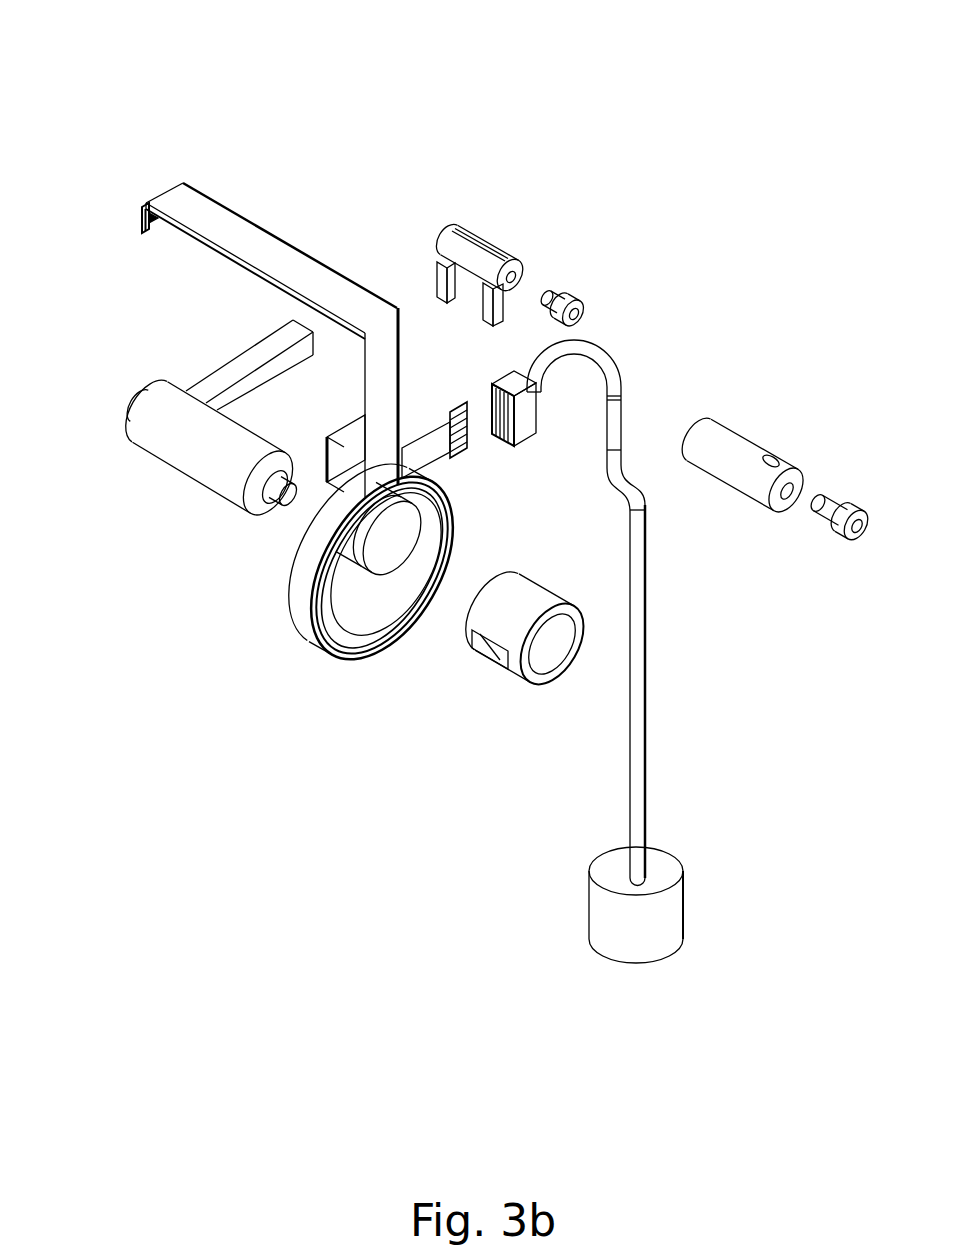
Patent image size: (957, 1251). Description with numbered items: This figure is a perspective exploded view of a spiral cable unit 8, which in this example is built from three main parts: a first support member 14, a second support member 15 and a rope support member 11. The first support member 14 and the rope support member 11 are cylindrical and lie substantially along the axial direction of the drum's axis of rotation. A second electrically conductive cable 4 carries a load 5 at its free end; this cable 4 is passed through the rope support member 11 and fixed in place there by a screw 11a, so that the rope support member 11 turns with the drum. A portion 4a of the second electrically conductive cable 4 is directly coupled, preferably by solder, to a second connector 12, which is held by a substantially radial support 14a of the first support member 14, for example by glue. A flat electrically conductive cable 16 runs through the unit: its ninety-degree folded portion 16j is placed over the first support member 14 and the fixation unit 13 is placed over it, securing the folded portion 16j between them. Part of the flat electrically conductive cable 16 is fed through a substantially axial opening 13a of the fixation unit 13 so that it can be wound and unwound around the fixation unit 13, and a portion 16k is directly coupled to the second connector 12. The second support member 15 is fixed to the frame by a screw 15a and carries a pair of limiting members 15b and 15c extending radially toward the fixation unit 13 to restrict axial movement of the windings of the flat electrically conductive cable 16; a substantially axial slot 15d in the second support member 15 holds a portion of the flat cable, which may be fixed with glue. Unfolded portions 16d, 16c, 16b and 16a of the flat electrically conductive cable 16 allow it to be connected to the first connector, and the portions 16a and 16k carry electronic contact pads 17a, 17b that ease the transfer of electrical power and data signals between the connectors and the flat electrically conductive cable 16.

The spiral cable unit 8 is at (755, 128).
The second electrically conductive cable 4 is at (648, 745).
The portion of the second electrically conductive cable 4a is at (598, 346).
The load 5 is at (687, 905).
The rope support member 11 is at (753, 440).
The screw 11a is at (823, 540).
The second connector 12 is at (522, 422).
The fixation unit 13 is at (552, 590).
The axial opening 13a is at (500, 652).
The first support member 14 is at (182, 475).
The support 14a is at (229, 357).
The second support member 15 is at (500, 244).
The screw 15a is at (565, 292).
The limiting member 15b is at (487, 312).
The limiting member 15c is at (432, 272).
The slot 15d is at (470, 232).
The flat electrically conductive cable 16 is at (310, 640).
The unfolded portion of the flat electrically conductive cable 16a is at (140, 220).
The unfolded portion of the flat electrically conductive cable 16b is at (280, 238).
The unfolded portion of the flat electrically conductive cable 16c is at (363, 380).
The unfolded portion of the flat electrically conductive cable 16d is at (341, 494).
The 90 degree folded portion 16j is at (413, 523).
The portion of the flat electrically conductive cable 16k is at (429, 455).
The electronic contact pad 17a is at (150, 232).
The electronic contact pad 17b is at (456, 449).